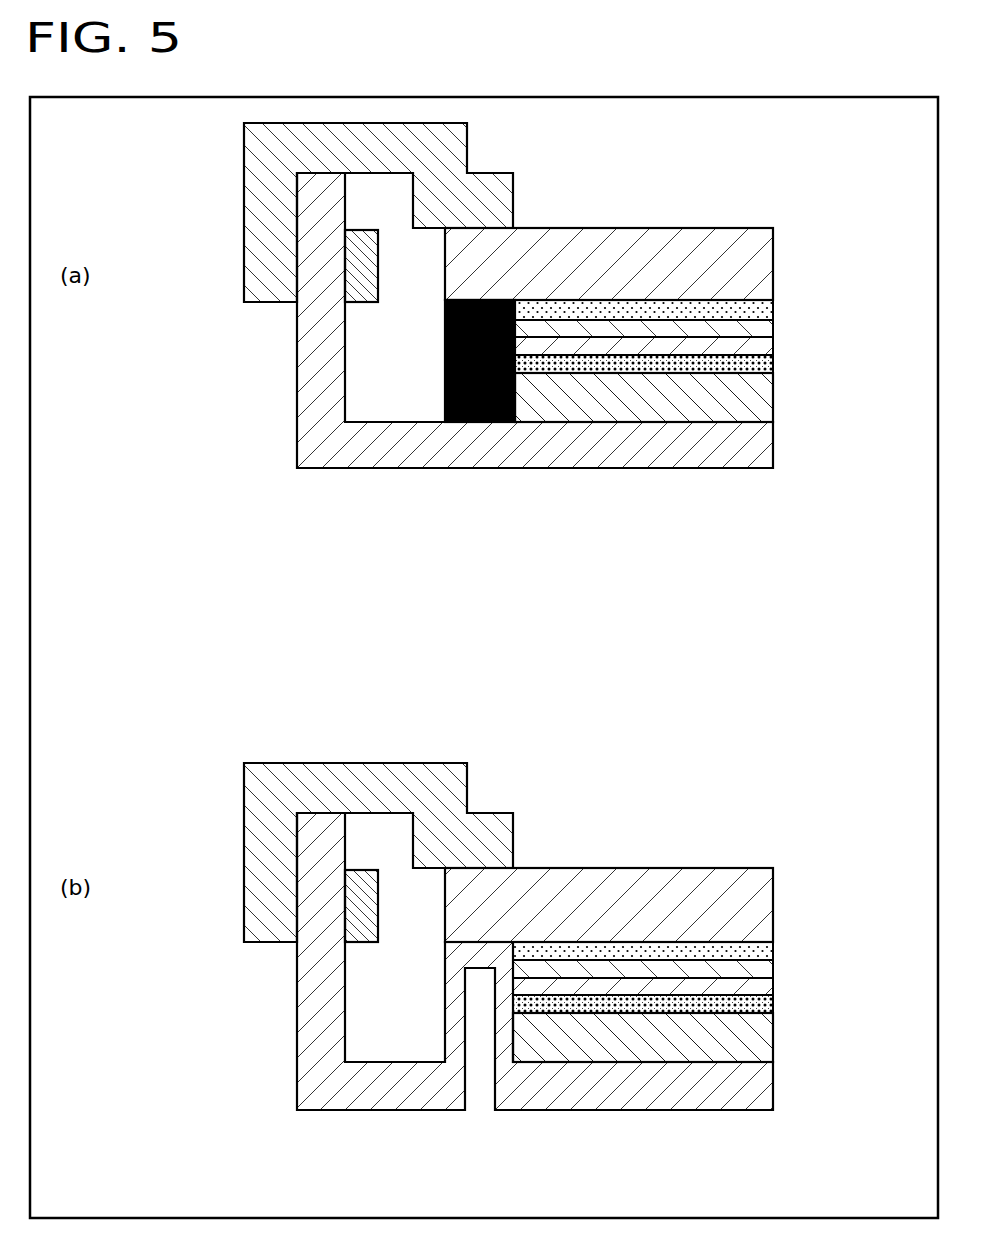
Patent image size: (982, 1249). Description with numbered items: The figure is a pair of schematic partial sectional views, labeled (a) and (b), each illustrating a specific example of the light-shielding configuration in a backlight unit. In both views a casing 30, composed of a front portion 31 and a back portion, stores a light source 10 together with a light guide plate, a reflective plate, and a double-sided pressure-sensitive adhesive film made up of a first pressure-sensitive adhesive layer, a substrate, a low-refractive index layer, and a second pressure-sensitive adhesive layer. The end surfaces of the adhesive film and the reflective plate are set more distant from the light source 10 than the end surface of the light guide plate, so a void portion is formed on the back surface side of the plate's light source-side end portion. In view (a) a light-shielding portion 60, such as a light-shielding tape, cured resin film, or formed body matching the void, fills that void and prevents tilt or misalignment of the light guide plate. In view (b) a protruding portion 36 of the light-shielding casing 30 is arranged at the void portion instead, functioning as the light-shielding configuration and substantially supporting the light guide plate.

The light source 10 is at (367, 283).
The casing 30 is at (175, 180).
The front portion 31 is at (255, 200).
The protruding portion 36 is at (463, 955).
The light-shielding portion 60 is at (443, 378).